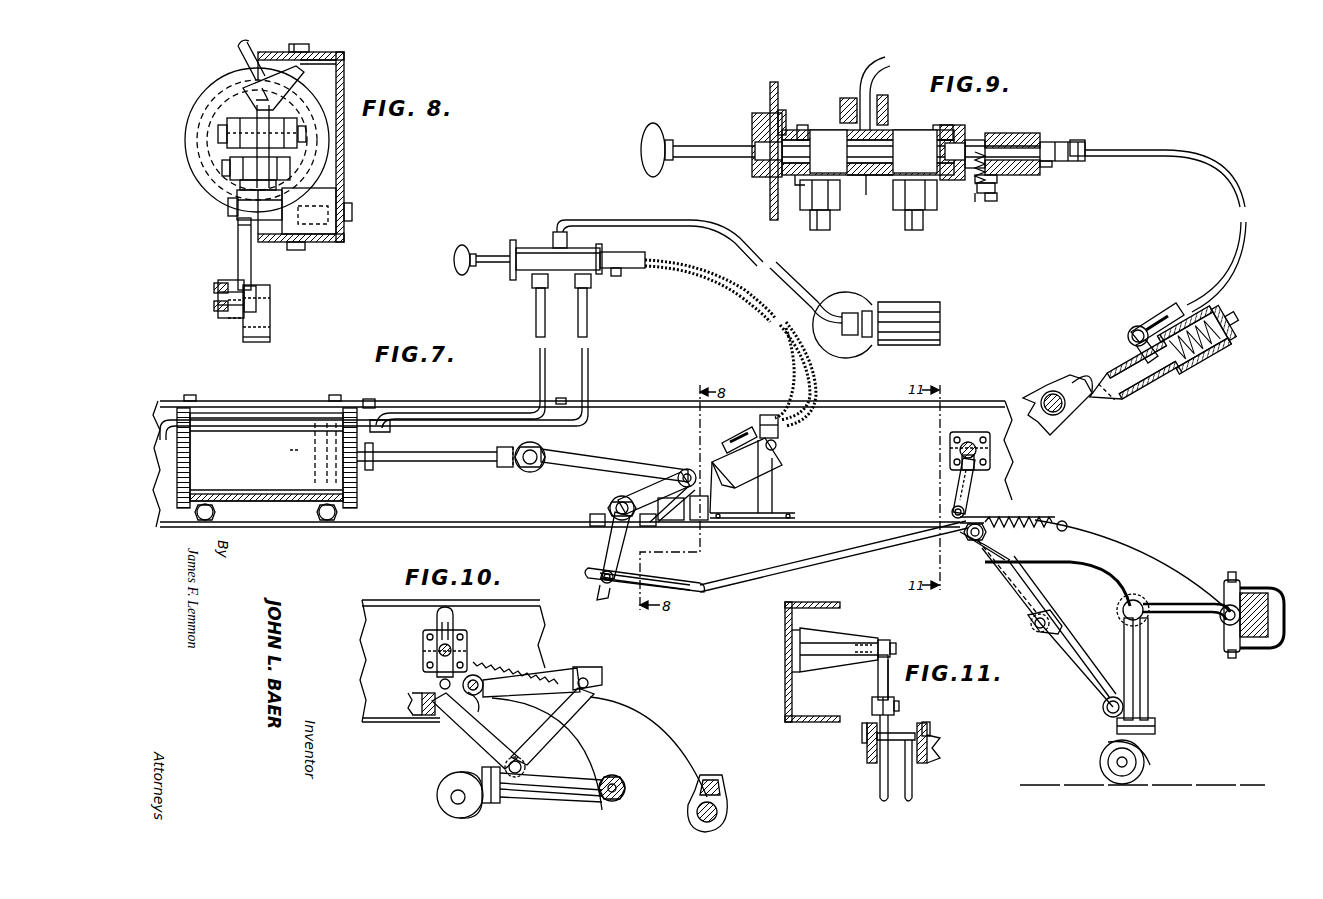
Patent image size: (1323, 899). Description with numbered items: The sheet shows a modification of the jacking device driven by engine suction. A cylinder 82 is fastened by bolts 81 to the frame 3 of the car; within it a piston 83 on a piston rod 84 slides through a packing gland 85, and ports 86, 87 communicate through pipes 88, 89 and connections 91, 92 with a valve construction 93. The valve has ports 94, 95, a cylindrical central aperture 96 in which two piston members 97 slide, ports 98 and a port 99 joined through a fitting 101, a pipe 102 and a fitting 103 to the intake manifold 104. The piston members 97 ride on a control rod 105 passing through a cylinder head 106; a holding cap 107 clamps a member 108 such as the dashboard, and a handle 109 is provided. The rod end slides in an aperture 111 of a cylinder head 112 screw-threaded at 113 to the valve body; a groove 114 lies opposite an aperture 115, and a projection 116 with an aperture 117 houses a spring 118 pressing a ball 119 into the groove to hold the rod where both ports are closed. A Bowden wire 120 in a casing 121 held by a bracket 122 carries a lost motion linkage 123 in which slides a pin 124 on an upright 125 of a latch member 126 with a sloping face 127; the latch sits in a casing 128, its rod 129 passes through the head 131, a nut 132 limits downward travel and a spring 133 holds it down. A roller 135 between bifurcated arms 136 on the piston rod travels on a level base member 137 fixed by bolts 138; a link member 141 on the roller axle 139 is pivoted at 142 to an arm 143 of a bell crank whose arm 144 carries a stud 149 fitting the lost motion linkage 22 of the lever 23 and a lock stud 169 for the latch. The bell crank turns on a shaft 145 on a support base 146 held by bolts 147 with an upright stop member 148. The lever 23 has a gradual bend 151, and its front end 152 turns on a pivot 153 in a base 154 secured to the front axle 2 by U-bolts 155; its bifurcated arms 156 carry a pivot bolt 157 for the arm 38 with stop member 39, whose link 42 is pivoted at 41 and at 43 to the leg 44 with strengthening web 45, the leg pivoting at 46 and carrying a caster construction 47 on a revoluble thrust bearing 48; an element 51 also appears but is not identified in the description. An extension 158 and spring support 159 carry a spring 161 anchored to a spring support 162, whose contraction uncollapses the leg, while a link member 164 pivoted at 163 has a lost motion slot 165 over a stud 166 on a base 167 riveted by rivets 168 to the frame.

In FIG. 7, the front axle 2 is at (1275, 616).
In FIG. 8, the frame 3 is at (344, 82).
In FIG. 7, the frame 3 is at (855, 408).
In FIG. 10, the frame 3 is at (372, 602).
In FIG. 11, the frame 3 is at (785, 606).
In FIG. 8, the lost motion linkage 22 is at (226, 318).
In FIG. 7, the lost motion linkage 22 is at (634, 590).
In FIG. 8, the lever 23 is at (215, 285).
In FIG. 7, the lever 23 is at (830, 565).
In FIG. 10, the lever 23 is at (410, 720).
In FIG. 7, the arm of bell crank lever 38 is at (1020, 605).
In FIG. 10, the arm of bell crank lever 38 is at (555, 675).
In FIG. 11, the arm of bell crank lever 38 is at (905, 800).
In FIG. 7, the stop member 39 is at (1052, 627).
In FIG. 10, the stop member 39 is at (598, 672).
In FIG. 7, the pivot 41 is at (1042, 630).
In FIG. 10, the pivot 41 is at (590, 683).
In FIG. 7, the link 42 is at (1082, 680).
In FIG. 10, the link 42 is at (560, 715).
In FIG. 7, the pivot 43 is at (1110, 713).
In FIG. 10, the pivot 43 is at (508, 760).
In FIG. 7, the leg 44 is at (1134, 660).
In FIG. 10, the leg 44 is at (520, 790).
In FIG. 7, the strengthening web 45 is at (1148, 690).
In FIG. 10, the strengthening web 45 is at (562, 798).
In FIG. 7, the pivot 46 is at (1145, 612).
In FIG. 10, the pivot 46 is at (625, 795).
In FIG. 7, the caster construction 47 is at (1146, 766).
In FIG. 10, the caster construction 47 is at (436, 799).
In FIG. 7, the revoluble thrust bearing 48 is at (1156, 727).
In FIG. 10, the revoluble thrust bearing 48 is at (490, 803).
In FIG. 10, the pin 51 is at (620, 782).
In FIG. 8, the bolts 81 is at (310, 50).
In FIG. 7, the bolts 81 is at (193, 395).
In FIG. 8, the cylinder 82 is at (205, 98).
In FIG. 7, the cylinder 82 is at (268, 425).
In FIG. 7, the piston 83 is at (312, 443).
In FIG. 7, the piston rod 84 is at (402, 460).
In FIG. 7, the packing gland 85 is at (372, 472).
In FIG. 7, the port 86 is at (172, 430).
In FIG. 7, the port 87 is at (385, 420).
In FIG. 9, the pipe 88 is at (923, 225).
In FIG. 7, the pipe 88 is at (238, 418).
In FIG. 8, the pipe 89 is at (240, 50).
In FIG. 9, the pipe 89 is at (830, 225).
In FIG. 7, the pipe 89 is at (385, 405).
In FIG. 9, the connection 91 is at (935, 198).
In FIG. 7, the connection 91 is at (592, 283).
In FIG. 9, the connection 92 is at (840, 198).
In FIG. 7, the connection 92 is at (536, 283).
In FIG. 9, the valve construction 93 is at (905, 132).
In FIG. 7, the valve construction 93 is at (536, 248).
In FIG. 9, the port 94 is at (885, 175).
In FIG. 9, the port 95 is at (802, 180).
In FIG. 9, the cylindrical central aperture 96 is at (868, 180).
In FIG. 9, the piston members 97 is at (828, 130).
In FIG. 9, the ports 98 is at (802, 125).
In FIG. 9, the port 99 is at (843, 108).
In FIG. 9, the fitting 101 is at (886, 100).
In FIG. 7, the fitting 101 is at (568, 240).
In FIG. 9, the pipe 102 is at (862, 72).
In FIG. 7, the pipe 102 is at (584, 215).
In FIG. 7, the fitting 103 is at (858, 310).
In FIG. 7, the intake manifold 104 is at (915, 305).
In FIG. 9, the control rod 105 is at (716, 148).
In FIG. 7, the control rod 105 is at (486, 254).
In FIG. 9, the cylinder head 106 is at (786, 115).
In FIG. 9, the holding cap 107 is at (752, 118).
In FIG. 9, the member 108 is at (770, 90).
In FIG. 9, the handle 109 is at (648, 130).
In FIG. 7, the handle 109 is at (455, 258).
In FIG. 9, the aperture 111 is at (1042, 138).
In FIG. 9, the cylinder head 112 is at (1040, 165).
In FIG. 7, the cylinder head 112 is at (636, 252).
In FIG. 9, the screw thread 113 is at (958, 130).
In FIG. 9, the groove 114 is at (1005, 140).
In FIG. 9, the aperture 115 is at (985, 140).
In FIG. 9, the projection 116 is at (992, 186).
In FIG. 7, the projection 116 is at (625, 274).
In FIG. 9, the aperture 117 is at (975, 183).
In FIG. 9, the spring 118 is at (995, 195).
In FIG. 9, the ball 119 is at (1000, 172).
In FIG. 9, the Bowden wire 120 is at (1210, 160).
In FIG. 7, the Bowden wire 120 is at (758, 425).
In FIG. 9, the Bowden wire casing 121 is at (1080, 145).
In FIG. 7, the Bowden wire casing 121 is at (738, 293).
In FIG. 7, the bracket 122 is at (780, 432).
In FIG. 9, the lost motion linkage 123 is at (1168, 305).
In FIG. 7, the lost motion linkage 123 is at (745, 433).
In FIG. 9, the pin 124 is at (1134, 329).
In FIG. 9, the upright 125 is at (1136, 350).
In FIG. 9, the latch member 126 is at (1166, 392).
In FIG. 7, the latch member 126 is at (730, 488).
In FIG. 9, the sloping face 127 is at (1110, 410).
In FIG. 9, the casing 128 is at (1197, 362).
In FIG. 7, the casing 128 is at (765, 462).
In FIG. 9, the rod 129 is at (1226, 325).
In FIG. 9, the head 131 is at (1222, 340).
In FIG. 9, the nut 132 is at (1220, 314).
In FIG. 7, the nut 132 is at (778, 447).
In FIG. 9, the spring 133 is at (1200, 376).
In FIG. 8, the roller 135 is at (270, 96).
In FIG. 7, the roller 135 is at (522, 470).
In FIG. 7, the bifurcated arms 136 is at (500, 466).
In FIG. 8, the level base member 137 is at (336, 62).
In FIG. 7, the level base member 137 is at (545, 444).
In FIG. 7, the bolts 138 is at (368, 400).
In FIG. 8, the axle 139 is at (220, 133).
In FIG. 7, the axle 139 is at (530, 470).
In FIG. 8, the link member 141 is at (238, 152).
In FIG. 7, the link member 141 is at (612, 466).
In FIG. 8, the pivot 142 is at (292, 168).
In FIG. 7, the pivot 142 is at (687, 468).
In FIG. 8, the arm of bell crank lever 143 is at (262, 188).
In FIG. 7, the arm of bell crank lever 143 is at (630, 492).
In FIG. 8, the arm of bell crank lever 144 is at (238, 250).
In FIG. 9, the arm of bell crank lever 144 is at (1035, 392).
In FIG. 7, the arm of bell crank lever 144 is at (612, 554).
In FIG. 8, the shaft 145 is at (236, 221).
In FIG. 7, the shaft 145 is at (608, 505).
In FIG. 8, the support base 146 is at (332, 236).
In FIG. 7, the support base 146 is at (672, 516).
In FIG. 8, the bolts 147 is at (297, 250).
In FIG. 7, the bolts 147 is at (596, 516).
In FIG. 8, the upright stop member 148 is at (266, 204).
In FIG. 7, the upright stop member 148 is at (698, 520).
In FIG. 8, the stud 149 is at (215, 300).
In FIG. 9, the stud 149 is at (1056, 414).
In FIG. 7, the stud 149 is at (600, 585).
In FIG. 7, the gradual bend 151 is at (1115, 540).
In FIG. 10, the gradual bend 151 is at (640, 745).
In FIG. 7, the front end 152 is at (1222, 588).
In FIG. 7, the pivot 153 is at (1225, 625).
In FIG. 10, the pivot 153 is at (728, 810).
In FIG. 7, the base 154 is at (1232, 585).
In FIG. 10, the base 154 is at (716, 780).
In FIG. 7, the U-bolts 155 is at (1262, 647).
In FIG. 7, the bifurcated arms 156 is at (985, 560).
In FIG. 10, the bifurcated arms 156 is at (462, 718).
In FIG. 11, the bifurcated arms 156 is at (925, 745).
In FIG. 7, the pivot bolt 157 is at (988, 538).
In FIG. 10, the pivot bolt 157 is at (480, 697).
In FIG. 11, the pivot bolt 157 is at (930, 726).
In FIG. 7, the extension 158 is at (966, 535).
In FIG. 10, the extension 158 is at (463, 700).
In FIG. 11, the extension 158 is at (872, 708).
In FIG. 7, the spring support 159 is at (1010, 515).
In FIG. 7, the spring 161 is at (1050, 518).
In FIG. 10, the spring 161 is at (505, 672).
In FIG. 7, the spring support 162 is at (1068, 524).
In FIG. 7, the pivot 163 is at (952, 512).
In FIG. 10, the pivot 163 is at (438, 684).
In FIG. 11, the pivot 163 is at (894, 706).
In FIG. 7, the link member 164 is at (958, 482).
In FIG. 10, the link member 164 is at (454, 640).
In FIG. 11, the link member 164 is at (879, 680).
In FIG. 7, the lost motion slot 165 is at (985, 470).
In FIG. 10, the lost motion slot 165 is at (436, 622).
In FIG. 11, the lost motion slot 165 is at (890, 675).
In FIG. 7, the stud 166 is at (978, 449).
In FIG. 10, the stud 166 is at (453, 651).
In FIG. 11, the stud 166 is at (893, 648).
In FIG. 7, the base 167 is at (975, 429).
In FIG. 10, the base 167 is at (462, 640).
In FIG. 11, the base 167 is at (845, 645).
In FIG. 7, the rivets 168 is at (953, 455).
In FIG. 10, the rivets 168 is at (426, 650).
In FIG. 11, the rivets 168 is at (792, 670).
In FIG. 8, the lock stud 169 is at (252, 337).
In FIG. 9, the lock stud 169 is at (1090, 378).
In FIG. 7, the lock stud 169 is at (598, 600).